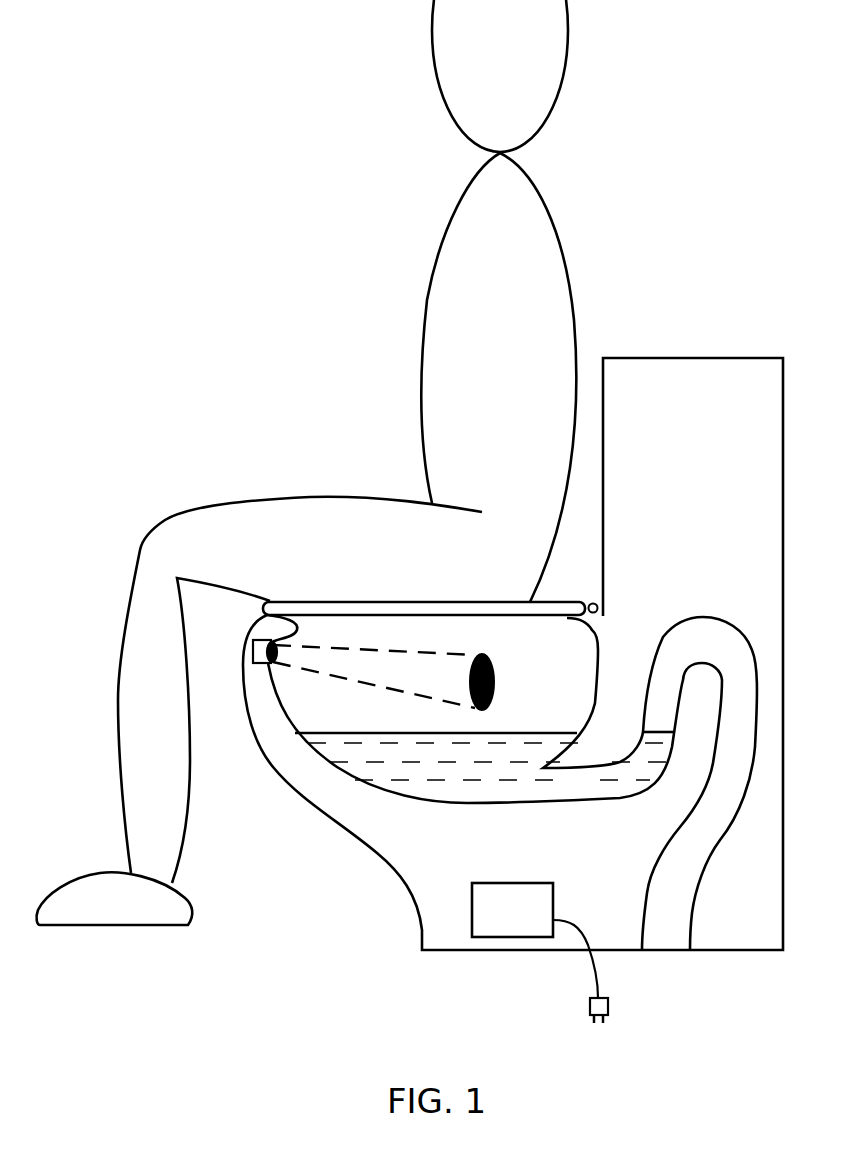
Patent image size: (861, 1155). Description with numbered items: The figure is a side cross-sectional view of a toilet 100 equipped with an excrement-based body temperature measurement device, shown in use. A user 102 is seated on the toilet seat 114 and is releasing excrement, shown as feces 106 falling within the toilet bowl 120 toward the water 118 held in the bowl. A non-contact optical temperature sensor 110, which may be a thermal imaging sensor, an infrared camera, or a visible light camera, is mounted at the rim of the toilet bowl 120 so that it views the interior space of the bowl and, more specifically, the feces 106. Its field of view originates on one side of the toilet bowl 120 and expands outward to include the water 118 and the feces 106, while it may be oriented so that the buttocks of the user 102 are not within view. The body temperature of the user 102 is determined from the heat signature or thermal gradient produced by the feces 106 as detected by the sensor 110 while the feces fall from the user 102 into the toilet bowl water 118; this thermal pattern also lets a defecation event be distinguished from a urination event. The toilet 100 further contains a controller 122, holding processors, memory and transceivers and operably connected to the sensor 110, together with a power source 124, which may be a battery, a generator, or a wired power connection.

The toilet 100 is at (723, 434).
The user 102 is at (425, 322).
The feces 106 is at (497, 693).
The non-contact optical temperature sensor 110 is at (254, 652).
The toilet seat 114 is at (453, 600).
The water 118 is at (489, 787).
The toilet bowl 120 is at (432, 684).
The controller 122 is at (502, 915).
The power source 124 is at (608, 1008).